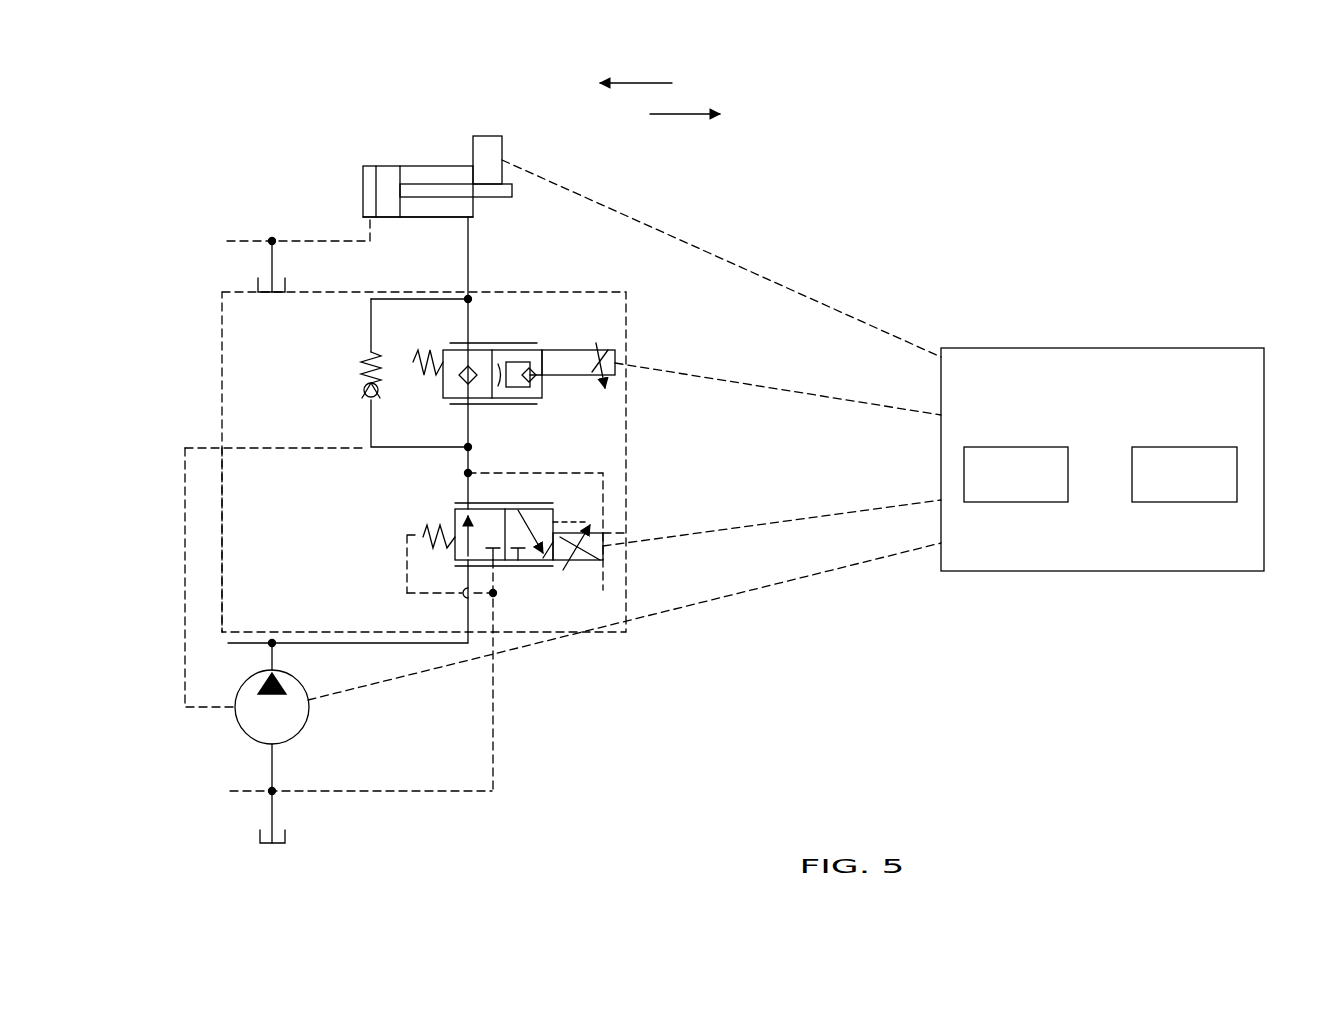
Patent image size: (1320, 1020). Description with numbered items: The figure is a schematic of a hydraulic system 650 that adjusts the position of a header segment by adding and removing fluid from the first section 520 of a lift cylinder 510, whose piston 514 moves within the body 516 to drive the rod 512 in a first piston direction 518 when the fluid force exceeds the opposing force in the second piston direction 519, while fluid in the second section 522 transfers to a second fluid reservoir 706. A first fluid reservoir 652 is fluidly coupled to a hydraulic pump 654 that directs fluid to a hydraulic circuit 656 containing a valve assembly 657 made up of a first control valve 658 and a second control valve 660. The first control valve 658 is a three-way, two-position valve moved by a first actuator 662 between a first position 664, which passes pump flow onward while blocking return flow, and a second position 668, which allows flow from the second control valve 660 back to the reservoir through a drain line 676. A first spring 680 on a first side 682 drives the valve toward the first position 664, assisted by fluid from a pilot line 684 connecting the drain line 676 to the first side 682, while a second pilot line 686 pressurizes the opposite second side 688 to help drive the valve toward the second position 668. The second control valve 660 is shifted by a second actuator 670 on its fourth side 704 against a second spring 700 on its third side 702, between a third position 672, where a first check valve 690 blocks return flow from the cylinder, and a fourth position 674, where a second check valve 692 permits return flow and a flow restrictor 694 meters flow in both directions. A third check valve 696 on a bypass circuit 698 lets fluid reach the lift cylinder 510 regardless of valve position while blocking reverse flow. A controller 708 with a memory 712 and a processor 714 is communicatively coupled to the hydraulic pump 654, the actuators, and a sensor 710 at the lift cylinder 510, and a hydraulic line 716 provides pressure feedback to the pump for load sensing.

The hydraulic system 650 is at (1200, 105).
The lift cylinder 510 is at (403, 148).
The rod 512 is at (507, 198).
The piston 514 is at (392, 175).
The body 516 is at (363, 203).
The first piston direction 518 is at (640, 83).
The second piston direction 519 is at (680, 114).
The first section 520 is at (470, 205).
The second section 522 is at (368, 183).
The first fluid reservoir 652 is at (282, 820).
The hydraulic pump 654 is at (300, 730).
The hydraulic circuit 656 is at (350, 458).
The valve assembly 657 is at (222, 585).
The first control valve 658 is at (668, 477).
The second control valve 660 is at (630, 300).
The first actuator 662 is at (600, 565).
The first position 664 is at (455, 515).
The second position 668 is at (535, 560).
The second actuator 670 is at (617, 378).
The third position 672 is at (480, 395).
The fourth position 674 is at (525, 390).
The drain line 676 is at (495, 710).
The first spring 680 is at (430, 530).
The first side 682 is at (385, 545).
The pilot line 684 is at (405, 590).
The second pilot line 686 is at (592, 470).
The second side 688 is at (630, 530).
The first check valve 690 is at (470, 365).
The second check valve 692 is at (532, 385).
The flow restrictor 694 is at (500, 362).
The third check valve 696 is at (362, 365).
The bypass circuit 698 is at (371, 427).
The second spring 700 is at (428, 350).
The third side 702 is at (443, 392).
The fourth side 704 is at (685, 343).
The second fluid reservoir 706 is at (270, 272).
The controller 708 is at (1043, 348).
The sensor 710 is at (485, 136).
The memory 712 is at (1040, 447).
The processor 714 is at (1210, 447).
The hydraulic line 716 is at (183, 513).